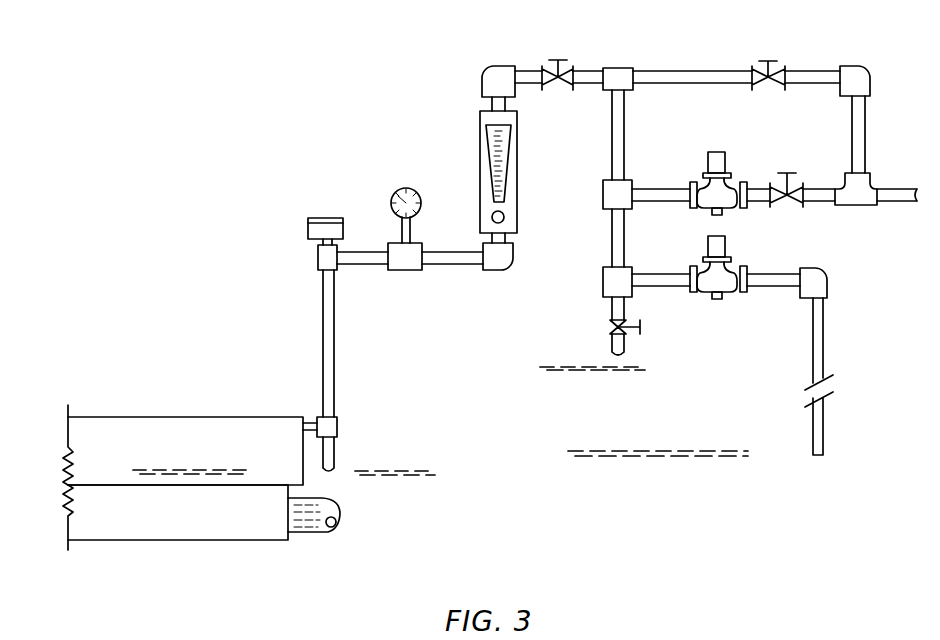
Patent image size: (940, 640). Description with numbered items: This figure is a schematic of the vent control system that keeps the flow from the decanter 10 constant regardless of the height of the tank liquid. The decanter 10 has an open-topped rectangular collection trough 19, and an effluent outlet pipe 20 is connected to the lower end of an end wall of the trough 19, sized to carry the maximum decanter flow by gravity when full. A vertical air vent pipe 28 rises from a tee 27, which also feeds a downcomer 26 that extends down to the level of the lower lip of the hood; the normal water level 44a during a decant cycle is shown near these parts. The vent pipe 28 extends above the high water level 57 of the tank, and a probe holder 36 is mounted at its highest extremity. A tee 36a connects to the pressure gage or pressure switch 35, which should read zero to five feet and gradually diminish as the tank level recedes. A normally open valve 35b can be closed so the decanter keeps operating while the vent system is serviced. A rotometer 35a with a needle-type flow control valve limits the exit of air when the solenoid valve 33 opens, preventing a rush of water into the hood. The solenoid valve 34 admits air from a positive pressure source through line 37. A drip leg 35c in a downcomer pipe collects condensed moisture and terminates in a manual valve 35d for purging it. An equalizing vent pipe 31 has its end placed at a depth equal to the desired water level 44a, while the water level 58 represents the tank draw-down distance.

The decanter 10 is at (190, 413).
The collection trough 19 is at (180, 542).
The effluent outlet pipe 20 is at (308, 534).
The downcomer 26 is at (337, 463).
The tee 27 is at (337, 429).
The air vent pipe 28 is at (323, 346).
The vent pipe 31 is at (823, 433).
The solenoid valve 33 is at (708, 247).
The solenoid valve 34 is at (713, 152).
The pressure gage 35 is at (394, 196).
The rotometer 35a is at (480, 147).
The valve 35b is at (558, 62).
The drip leg 35c is at (611, 300).
The manual valve 35d is at (615, 327).
The probe holder 36 is at (314, 218).
The tee 36a is at (318, 257).
The air line 37 is at (896, 191).
The water level 44a is at (232, 470).
The high water level 57 is at (594, 365).
The water level 58 is at (600, 450).